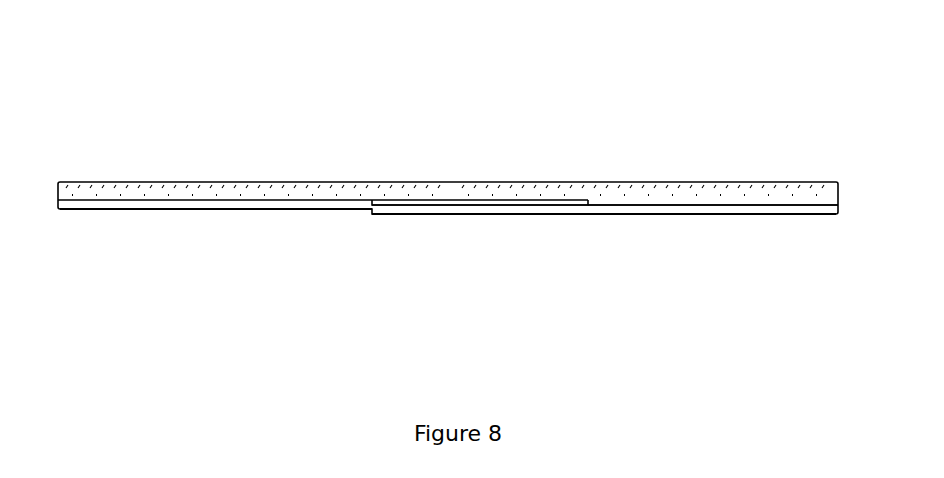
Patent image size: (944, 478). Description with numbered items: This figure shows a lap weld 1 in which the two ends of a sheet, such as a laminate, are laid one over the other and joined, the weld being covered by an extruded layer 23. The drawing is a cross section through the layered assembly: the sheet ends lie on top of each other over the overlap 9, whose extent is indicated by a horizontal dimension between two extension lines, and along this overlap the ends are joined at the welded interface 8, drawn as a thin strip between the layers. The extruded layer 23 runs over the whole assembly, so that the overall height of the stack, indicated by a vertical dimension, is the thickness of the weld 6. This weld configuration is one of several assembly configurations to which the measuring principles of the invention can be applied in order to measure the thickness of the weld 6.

The weld 1 is at (448, 166).
The extruded layer 23 is at (208, 192).
The welded interface 8 is at (440, 205).
The thickness of the weld 6 is at (452, 268).
The overlap 9 is at (373, 212).